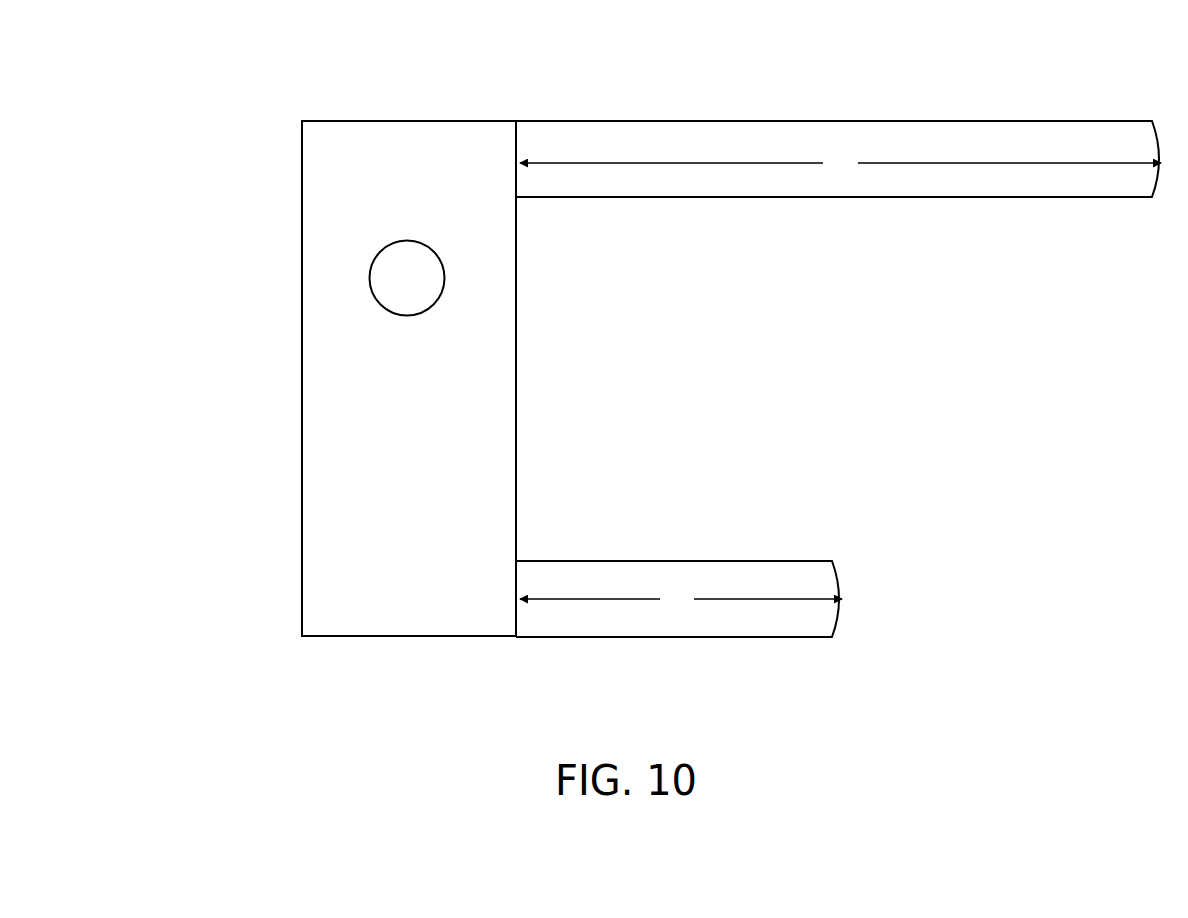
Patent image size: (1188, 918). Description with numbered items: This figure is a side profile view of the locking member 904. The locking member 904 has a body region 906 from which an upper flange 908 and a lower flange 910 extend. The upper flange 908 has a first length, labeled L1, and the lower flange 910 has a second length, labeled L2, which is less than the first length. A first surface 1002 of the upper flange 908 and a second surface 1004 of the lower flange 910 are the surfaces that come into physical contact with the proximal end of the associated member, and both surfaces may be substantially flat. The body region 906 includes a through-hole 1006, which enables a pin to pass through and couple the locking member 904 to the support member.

The locking member 904 is at (192, 45).
The body region 906 is at (482, 120).
The upper flange 908 is at (755, 120).
The lower flange 910 is at (800, 639).
The first surface 1002 is at (743, 208).
The second surface 1004 is at (717, 550).
The through-hole 1006 is at (409, 241).